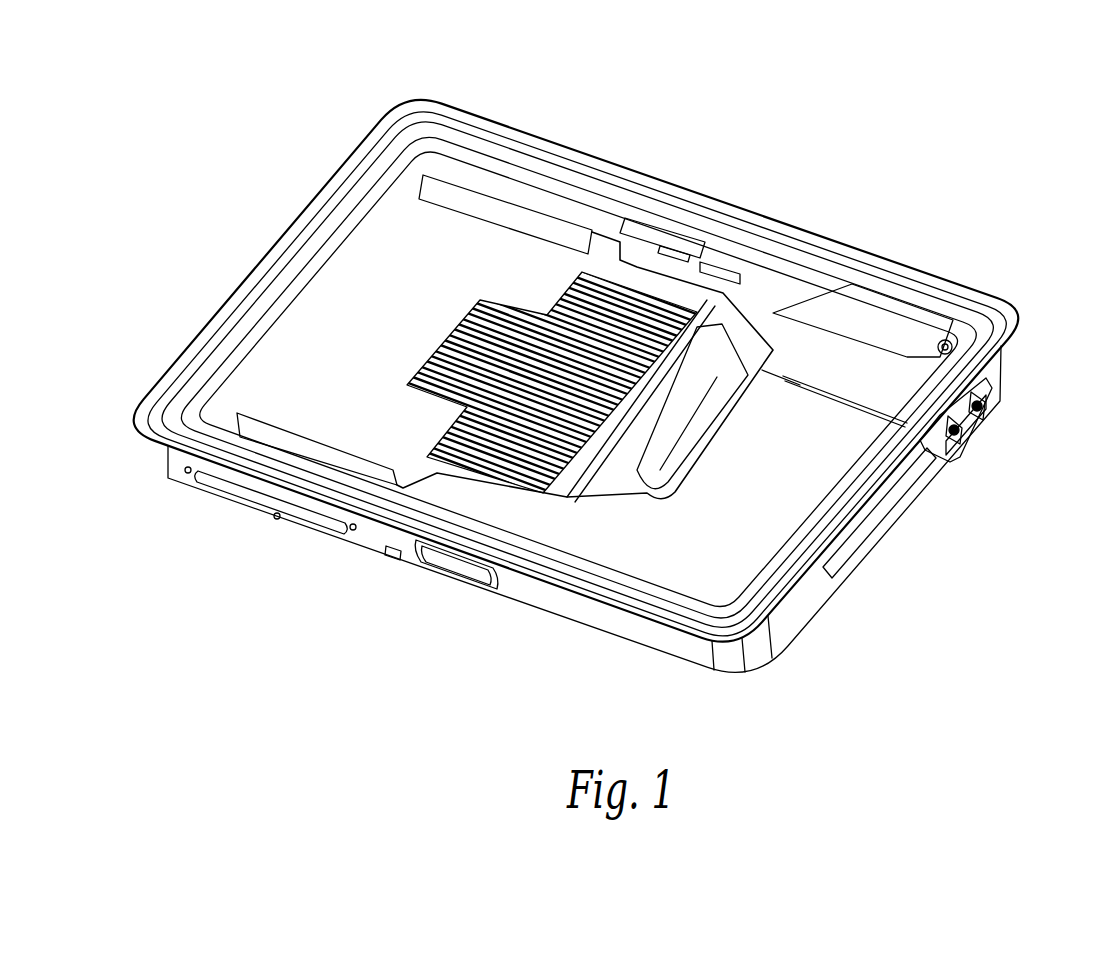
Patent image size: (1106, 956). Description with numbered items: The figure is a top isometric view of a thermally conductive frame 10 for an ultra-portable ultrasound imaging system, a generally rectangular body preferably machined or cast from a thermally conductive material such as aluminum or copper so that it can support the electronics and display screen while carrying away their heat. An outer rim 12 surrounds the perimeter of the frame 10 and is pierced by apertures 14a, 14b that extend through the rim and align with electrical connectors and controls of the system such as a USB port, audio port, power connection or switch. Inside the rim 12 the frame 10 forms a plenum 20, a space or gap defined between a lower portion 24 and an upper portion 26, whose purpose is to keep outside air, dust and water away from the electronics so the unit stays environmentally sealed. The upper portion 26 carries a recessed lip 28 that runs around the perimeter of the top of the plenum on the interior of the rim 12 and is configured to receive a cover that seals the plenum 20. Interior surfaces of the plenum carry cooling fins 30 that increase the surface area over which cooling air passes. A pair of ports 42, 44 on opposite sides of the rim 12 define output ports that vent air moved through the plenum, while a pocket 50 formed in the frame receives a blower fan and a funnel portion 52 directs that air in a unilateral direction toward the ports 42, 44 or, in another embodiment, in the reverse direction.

The thermally conductive frame 10 is at (615, 360).
The outer rim 12 is at (793, 226).
The aperture 14a is at (475, 582).
The aperture 14b is at (990, 410).
The plenum 20 is at (350, 290).
The lower portion 24 is at (285, 382).
The upper portion 26 is at (648, 250).
The recessed lip 28 is at (472, 172).
The cooling fins 30 is at (478, 296).
The port 42 is at (242, 484).
The port 44 is at (597, 132).
The pocket 50 is at (782, 482).
The funnel portion 52 is at (633, 455).